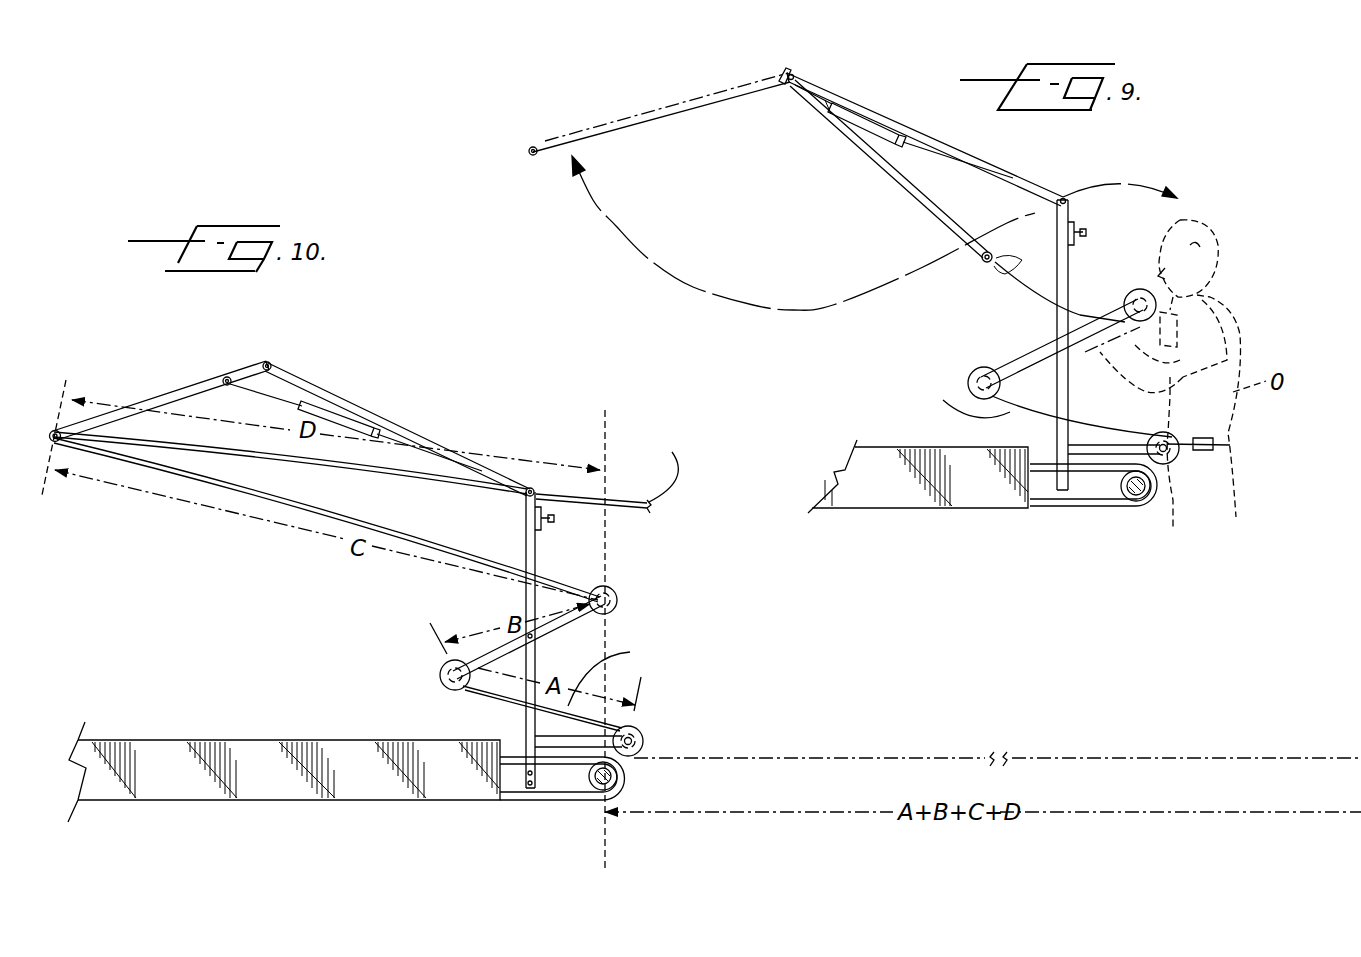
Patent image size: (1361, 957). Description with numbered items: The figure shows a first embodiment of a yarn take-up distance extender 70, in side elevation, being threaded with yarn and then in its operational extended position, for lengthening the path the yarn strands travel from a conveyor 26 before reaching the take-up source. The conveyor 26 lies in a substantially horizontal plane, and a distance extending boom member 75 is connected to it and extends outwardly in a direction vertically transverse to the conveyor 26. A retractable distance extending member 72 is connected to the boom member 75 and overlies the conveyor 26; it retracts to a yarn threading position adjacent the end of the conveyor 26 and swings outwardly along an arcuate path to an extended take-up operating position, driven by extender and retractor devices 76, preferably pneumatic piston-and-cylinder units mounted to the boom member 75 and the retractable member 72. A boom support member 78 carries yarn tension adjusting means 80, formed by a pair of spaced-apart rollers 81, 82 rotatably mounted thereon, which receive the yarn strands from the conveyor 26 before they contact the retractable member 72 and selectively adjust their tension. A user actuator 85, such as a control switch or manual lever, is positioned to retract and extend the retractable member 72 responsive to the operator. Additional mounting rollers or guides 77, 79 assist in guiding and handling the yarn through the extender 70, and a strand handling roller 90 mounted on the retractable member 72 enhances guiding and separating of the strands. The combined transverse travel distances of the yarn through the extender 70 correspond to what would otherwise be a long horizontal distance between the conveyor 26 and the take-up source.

In FIG. 9, the conveyor 26 is at (910, 497).
In FIG. 10, the conveyor 26 is at (325, 748).
In FIG. 9, the yarn take-up distance extender 70 is at (1278, 130).
In FIG. 10, the yarn take-up distance extender 70 is at (399, 375).
In FIG. 9, the retractable distance extending member 72 is at (900, 187).
In FIG. 10, the retractable distance extending member 72 is at (173, 396).
In FIG. 9, the distance extending boom member 75 is at (955, 150).
In FIG. 10, the distance extending boom member 75 is at (430, 445).
In FIG. 9, the extender and retractor devices 76 is at (862, 117).
In FIG. 10, the extender and retractor devices 76 is at (323, 412).
In FIG. 9, the mounting roller 77 is at (1170, 470).
In FIG. 10, the mounting roller 77 is at (641, 728).
In FIG. 9, the boom support member 78 is at (1069, 275).
In FIG. 10, the boom support member 78 is at (531, 592).
In FIG. 10, the mounting rod or guide 79 is at (535, 490).
In FIG. 9, the yarn tension adjusting means 80 is at (1050, 336).
In FIG. 10, the yarn tension adjusting means 80 is at (470, 615).
In FIG. 9, the roller 81 is at (1140, 288).
In FIG. 10, the roller 81 is at (618, 602).
In FIG. 9, the roller 82 is at (972, 376).
In FIG. 10, the roller 82 is at (441, 676).
In FIG. 9, the user actuator 85 is at (1081, 228).
In FIG. 10, the user actuator 85 is at (543, 523).
In FIG. 9, the strand handling roller 90 is at (984, 262).
In FIG. 10, the strand handling roller 90 is at (56, 430).